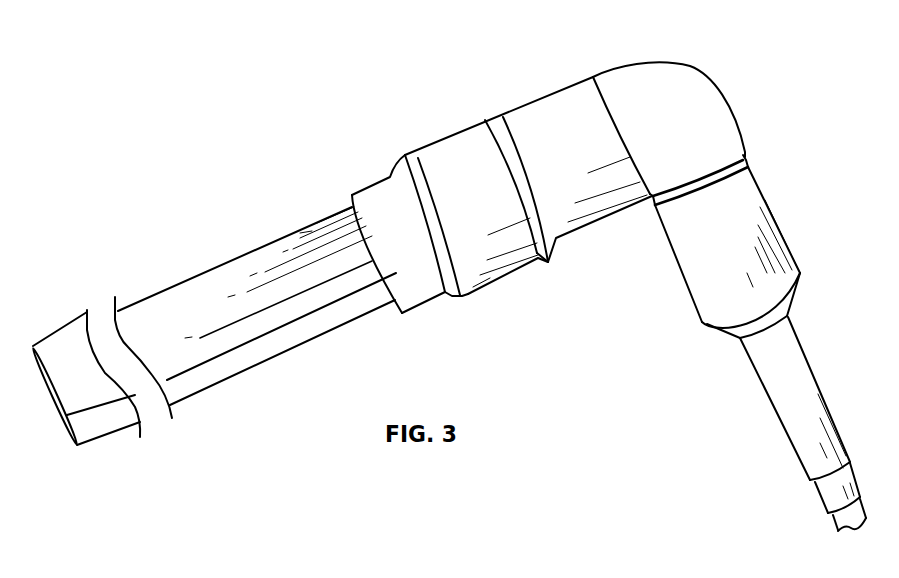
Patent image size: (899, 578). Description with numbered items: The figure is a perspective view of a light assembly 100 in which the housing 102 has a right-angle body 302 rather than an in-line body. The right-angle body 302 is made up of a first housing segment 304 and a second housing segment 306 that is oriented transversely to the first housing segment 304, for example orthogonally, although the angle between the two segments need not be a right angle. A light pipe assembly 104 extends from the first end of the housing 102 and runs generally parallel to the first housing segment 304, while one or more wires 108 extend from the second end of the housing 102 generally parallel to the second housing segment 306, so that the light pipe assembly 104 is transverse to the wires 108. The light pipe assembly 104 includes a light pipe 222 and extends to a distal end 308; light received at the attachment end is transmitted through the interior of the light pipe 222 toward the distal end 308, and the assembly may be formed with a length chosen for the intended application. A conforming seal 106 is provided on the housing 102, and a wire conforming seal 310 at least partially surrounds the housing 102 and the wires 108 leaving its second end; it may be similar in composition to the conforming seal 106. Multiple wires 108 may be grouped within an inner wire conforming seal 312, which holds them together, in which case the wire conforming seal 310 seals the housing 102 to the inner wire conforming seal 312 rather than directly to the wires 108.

The light assembly 100 is at (160, 131).
The housing 102 is at (598, 58).
The light pipe assembly 104 is at (171, 215).
The conforming seal 106 is at (420, 167).
The wires 108 is at (837, 522).
The light pipe 222 is at (190, 278).
The right-angle body 302 is at (693, 78).
The first housing segment 304 is at (588, 69).
The second housing segment 306 is at (746, 146).
The distal end 308 is at (56, 416).
The wire conforming seal 310 is at (748, 350).
The inner wire conforming seal 312 is at (820, 489).